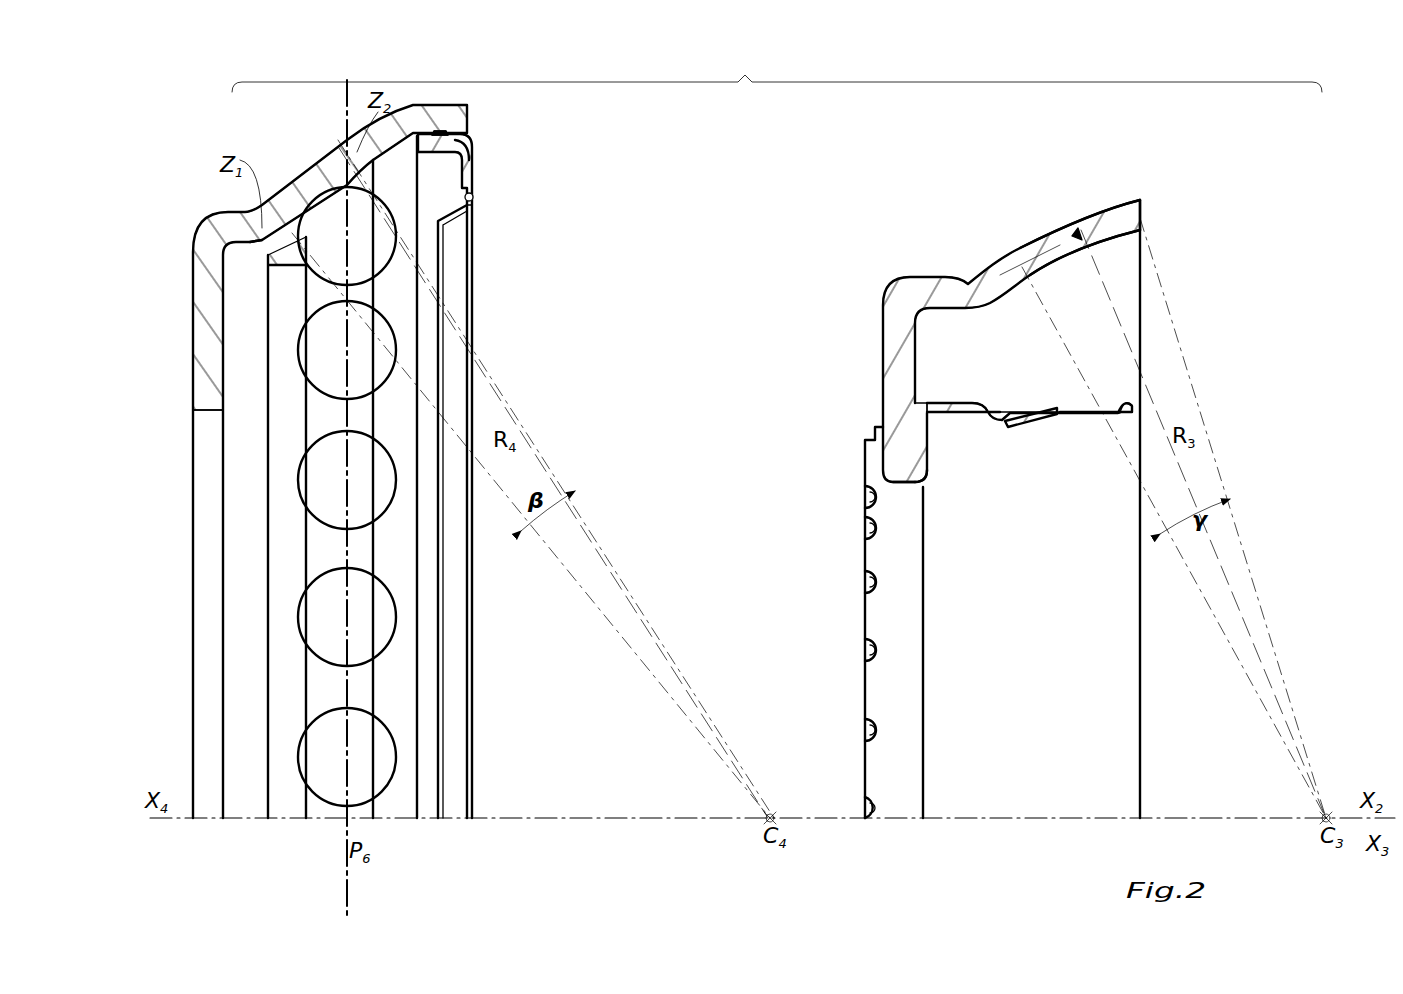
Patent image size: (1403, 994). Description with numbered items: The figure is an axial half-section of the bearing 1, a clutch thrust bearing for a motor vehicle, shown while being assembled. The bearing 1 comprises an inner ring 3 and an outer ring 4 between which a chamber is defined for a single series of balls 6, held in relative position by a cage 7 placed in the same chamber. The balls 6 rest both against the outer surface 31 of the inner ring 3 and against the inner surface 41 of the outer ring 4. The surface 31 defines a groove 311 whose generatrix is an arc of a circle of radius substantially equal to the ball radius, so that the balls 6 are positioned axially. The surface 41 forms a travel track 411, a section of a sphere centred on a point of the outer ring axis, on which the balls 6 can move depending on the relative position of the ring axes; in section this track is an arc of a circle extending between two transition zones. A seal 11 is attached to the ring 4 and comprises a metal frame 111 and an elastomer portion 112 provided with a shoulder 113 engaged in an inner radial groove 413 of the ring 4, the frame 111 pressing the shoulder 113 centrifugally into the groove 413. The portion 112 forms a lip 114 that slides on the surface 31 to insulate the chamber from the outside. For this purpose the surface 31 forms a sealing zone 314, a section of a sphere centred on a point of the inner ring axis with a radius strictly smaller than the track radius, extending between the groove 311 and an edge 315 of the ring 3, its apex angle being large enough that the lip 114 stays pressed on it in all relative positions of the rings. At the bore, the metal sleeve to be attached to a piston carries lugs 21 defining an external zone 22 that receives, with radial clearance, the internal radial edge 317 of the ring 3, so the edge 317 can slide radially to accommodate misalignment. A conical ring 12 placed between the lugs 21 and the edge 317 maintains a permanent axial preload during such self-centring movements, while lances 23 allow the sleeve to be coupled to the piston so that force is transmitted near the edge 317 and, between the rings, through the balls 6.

The bearing 1 is at (777, 68).
The outer ring 4 is at (302, 172).
The inner surface of the outer ring 41 is at (250, 250).
The travel track 411 is at (334, 688).
The inner radial groove 413 is at (440, 133).
The cage 7 is at (298, 258).
The balls 6 is at (347, 350).
The seal 11 is at (553, 160).
The metal frame 111 is at (467, 150).
The elastomer portion 112 is at (474, 197).
The shoulder 113 is at (442, 129).
The lip 114 is at (458, 224).
The inner ring 3 is at (883, 320).
The outer surface of the inner ring 31 is at (848, 165).
The sealing zone 314 is at (1050, 226).
The groove 311 is at (984, 278).
The edge 315 is at (1146, 218).
The internal radial edge 317 is at (910, 452).
The conical ring 12 is at (882, 405).
The lances 23 is at (1026, 430).
The external zone 22 is at (928, 476).
The lugs 21 is at (863, 470).